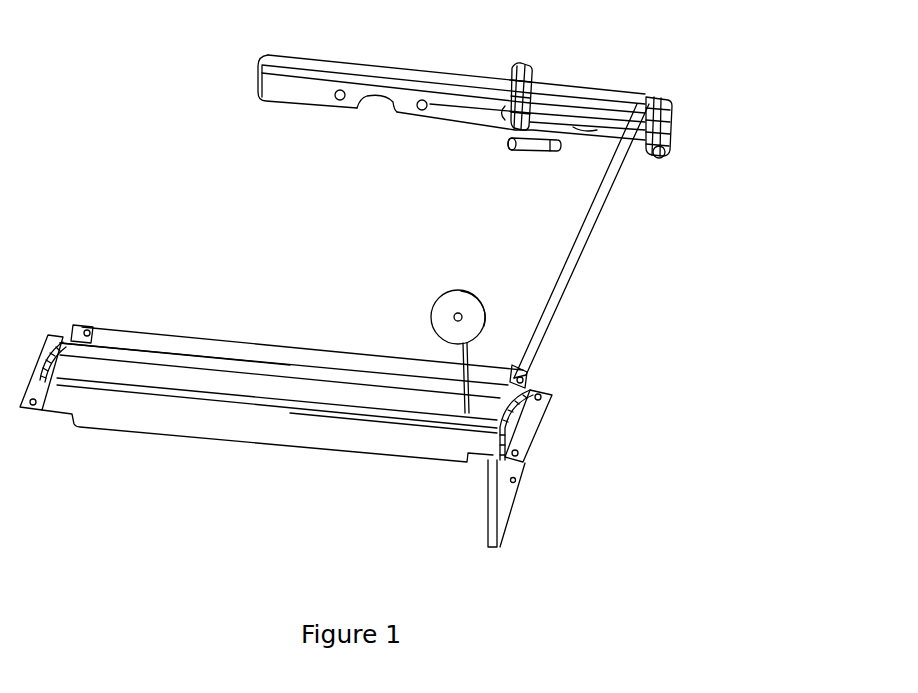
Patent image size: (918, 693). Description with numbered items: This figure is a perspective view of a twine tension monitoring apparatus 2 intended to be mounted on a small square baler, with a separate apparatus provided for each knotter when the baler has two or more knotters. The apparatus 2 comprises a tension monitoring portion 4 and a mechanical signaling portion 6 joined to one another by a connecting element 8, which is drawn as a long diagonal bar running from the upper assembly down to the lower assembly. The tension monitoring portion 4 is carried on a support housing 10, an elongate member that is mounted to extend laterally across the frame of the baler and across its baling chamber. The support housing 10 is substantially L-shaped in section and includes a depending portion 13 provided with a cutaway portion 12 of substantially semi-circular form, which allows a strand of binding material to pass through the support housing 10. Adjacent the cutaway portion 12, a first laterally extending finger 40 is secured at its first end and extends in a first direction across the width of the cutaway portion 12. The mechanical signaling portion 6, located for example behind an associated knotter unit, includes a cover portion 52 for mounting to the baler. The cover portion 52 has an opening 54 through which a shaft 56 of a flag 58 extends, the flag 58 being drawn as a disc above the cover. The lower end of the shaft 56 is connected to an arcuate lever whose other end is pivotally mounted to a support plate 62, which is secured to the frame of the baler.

The twine tension monitoring apparatus 2 is at (208, 180).
The tension monitoring portion 4 is at (530, 44).
The mechanical signaling portion 6 is at (300, 477).
The connecting element 8 is at (580, 230).
The support housing 10 is at (393, 72).
The cutaway portion 12 is at (363, 99).
The depending portion 13 is at (285, 92).
The first laterally extending finger 40 is at (537, 150).
The cover portion 52 is at (257, 443).
The opening 54 is at (83, 368).
The shaft 56 is at (472, 355).
The flag 58 is at (444, 297).
The support plate 62 is at (503, 500).